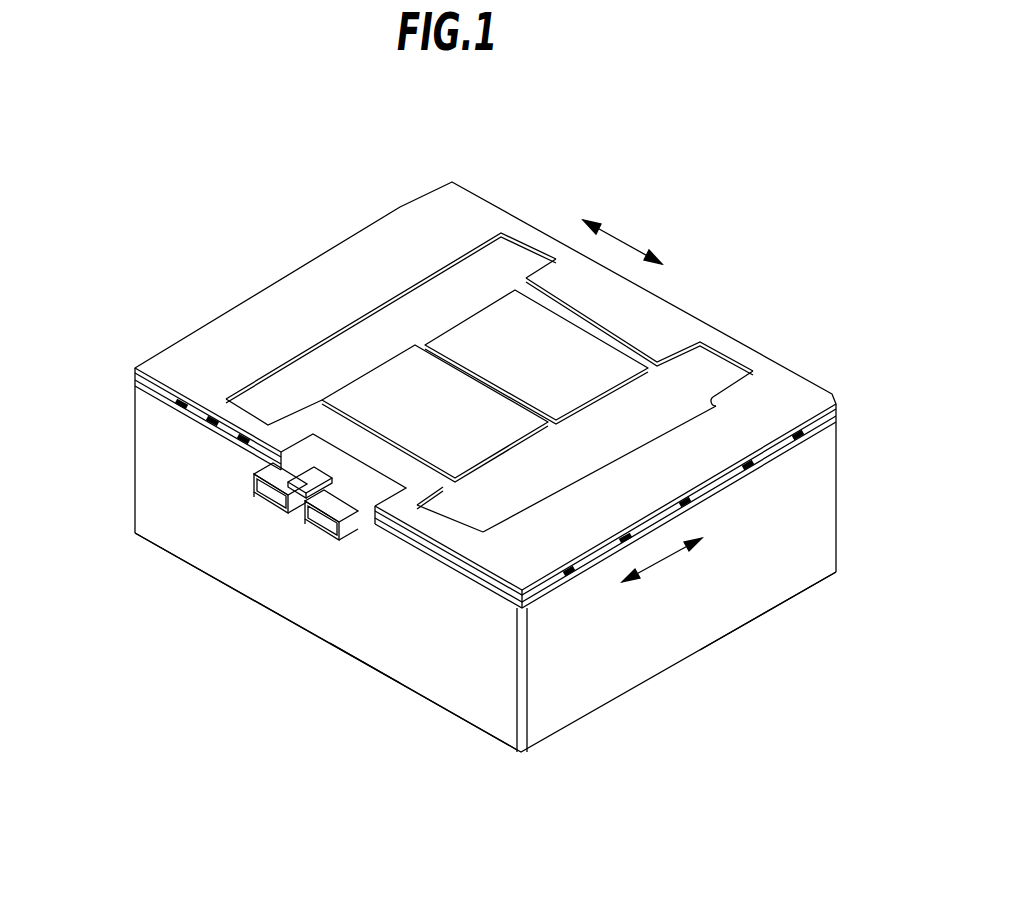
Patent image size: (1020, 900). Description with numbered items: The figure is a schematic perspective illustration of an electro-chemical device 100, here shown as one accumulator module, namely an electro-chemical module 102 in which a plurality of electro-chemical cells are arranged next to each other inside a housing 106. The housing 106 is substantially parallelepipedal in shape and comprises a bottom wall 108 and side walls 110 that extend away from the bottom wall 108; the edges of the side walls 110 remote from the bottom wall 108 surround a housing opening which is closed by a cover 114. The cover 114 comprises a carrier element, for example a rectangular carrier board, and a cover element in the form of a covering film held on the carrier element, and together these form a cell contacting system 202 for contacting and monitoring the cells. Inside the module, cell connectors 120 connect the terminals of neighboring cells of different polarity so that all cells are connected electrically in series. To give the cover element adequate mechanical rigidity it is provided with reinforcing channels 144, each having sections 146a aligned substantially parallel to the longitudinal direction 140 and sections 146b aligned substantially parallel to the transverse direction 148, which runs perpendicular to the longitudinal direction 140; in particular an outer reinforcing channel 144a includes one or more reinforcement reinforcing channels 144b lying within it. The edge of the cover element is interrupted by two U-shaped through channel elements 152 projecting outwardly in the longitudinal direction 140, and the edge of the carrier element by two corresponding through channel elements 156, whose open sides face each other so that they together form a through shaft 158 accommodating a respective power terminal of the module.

The electro-chemical device 100 is at (190, 300).
The electro-chemical module 102 is at (244, 268).
The housing 106 is at (664, 686).
The bottom wall 108 is at (436, 708).
The side walls 110 is at (378, 634).
The cover 114 is at (495, 188).
The cell connectors 120 is at (262, 486).
The longitudinal direction 140 is at (660, 560).
The reinforcing channels 144 is at (526, 243).
The outer reinforcing channel 144a is at (457, 256).
The reinforcement reinforcing channels 144b is at (660, 358).
The sections 146a is at (720, 404).
The sections 146b is at (760, 350).
The transverse direction 148 is at (622, 242).
The through channel elements 152 is at (250, 470).
The through channel elements 156 is at (262, 502).
The through shaft 158 is at (256, 511).
The cell contacting system 202 is at (304, 228).